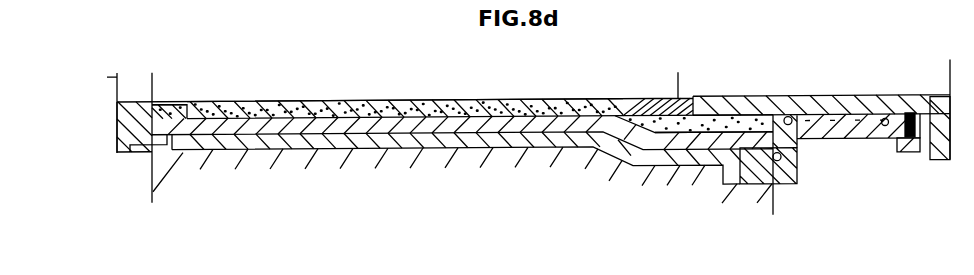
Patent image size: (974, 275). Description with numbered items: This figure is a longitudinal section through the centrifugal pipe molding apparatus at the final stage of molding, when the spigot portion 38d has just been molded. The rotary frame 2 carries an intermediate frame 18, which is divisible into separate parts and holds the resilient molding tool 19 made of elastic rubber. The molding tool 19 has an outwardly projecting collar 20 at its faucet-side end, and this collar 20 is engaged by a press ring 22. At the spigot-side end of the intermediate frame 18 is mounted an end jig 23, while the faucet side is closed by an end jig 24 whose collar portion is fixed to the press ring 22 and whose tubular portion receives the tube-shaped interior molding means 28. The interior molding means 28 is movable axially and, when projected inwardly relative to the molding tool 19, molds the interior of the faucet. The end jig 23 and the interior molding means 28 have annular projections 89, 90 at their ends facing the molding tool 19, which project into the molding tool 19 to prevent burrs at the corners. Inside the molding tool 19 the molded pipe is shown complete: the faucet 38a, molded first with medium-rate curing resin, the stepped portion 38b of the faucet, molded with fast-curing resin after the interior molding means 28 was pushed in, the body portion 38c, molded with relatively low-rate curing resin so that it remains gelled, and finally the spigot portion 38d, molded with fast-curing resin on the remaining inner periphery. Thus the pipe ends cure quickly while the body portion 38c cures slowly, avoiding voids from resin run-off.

The rotary frame 2 is at (531, 203).
The intermediate frame 18 is at (412, 147).
The resilient molding tool 19 is at (470, 130).
The collar 20 is at (777, 187).
The press ring 22 is at (755, 176).
The end jig 23 is at (118, 131).
The end jig 24 is at (845, 142).
The interior molding means 28 is at (763, 111).
The faucet 38a is at (698, 137).
The stepped portion of the faucet 38b is at (657, 105).
The body portion 38c is at (378, 110).
The spigot portion 38d is at (175, 114).
The annular projection 89 is at (155, 102).
The annular projection 90 is at (688, 104).